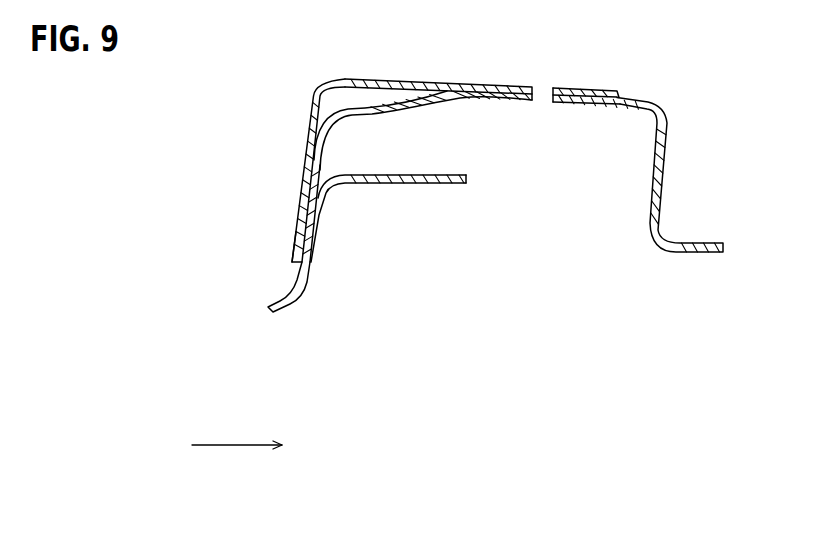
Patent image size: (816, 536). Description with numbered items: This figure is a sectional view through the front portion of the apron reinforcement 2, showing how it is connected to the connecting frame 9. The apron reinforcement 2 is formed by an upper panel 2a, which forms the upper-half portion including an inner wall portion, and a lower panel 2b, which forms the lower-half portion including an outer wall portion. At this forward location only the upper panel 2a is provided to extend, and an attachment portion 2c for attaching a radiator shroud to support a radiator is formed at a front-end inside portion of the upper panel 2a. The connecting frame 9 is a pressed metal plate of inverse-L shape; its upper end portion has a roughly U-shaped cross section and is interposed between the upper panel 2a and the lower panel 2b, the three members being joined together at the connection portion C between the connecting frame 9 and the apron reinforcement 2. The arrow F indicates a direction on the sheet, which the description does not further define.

The apron reinforcement 2 is at (314, 92).
The upper panel 2a is at (358, 78).
The lower panel 2b is at (402, 184).
The attachment portion 2c is at (555, 88).
The connecting frame 9 is at (666, 182).
The connection portion C is at (296, 233).
The forward direction F is at (225, 445).